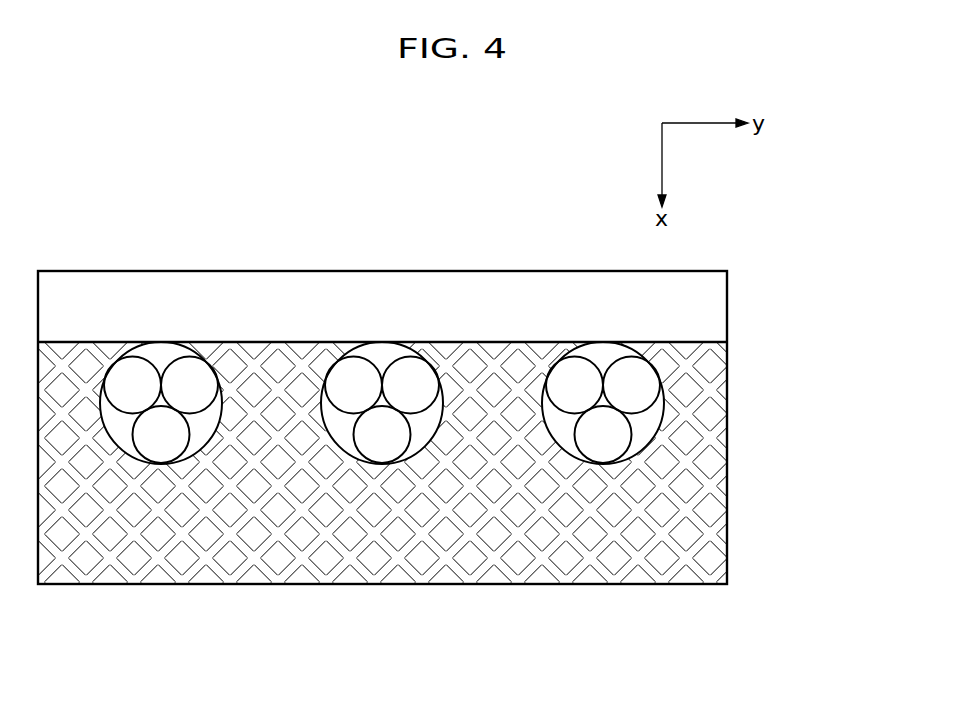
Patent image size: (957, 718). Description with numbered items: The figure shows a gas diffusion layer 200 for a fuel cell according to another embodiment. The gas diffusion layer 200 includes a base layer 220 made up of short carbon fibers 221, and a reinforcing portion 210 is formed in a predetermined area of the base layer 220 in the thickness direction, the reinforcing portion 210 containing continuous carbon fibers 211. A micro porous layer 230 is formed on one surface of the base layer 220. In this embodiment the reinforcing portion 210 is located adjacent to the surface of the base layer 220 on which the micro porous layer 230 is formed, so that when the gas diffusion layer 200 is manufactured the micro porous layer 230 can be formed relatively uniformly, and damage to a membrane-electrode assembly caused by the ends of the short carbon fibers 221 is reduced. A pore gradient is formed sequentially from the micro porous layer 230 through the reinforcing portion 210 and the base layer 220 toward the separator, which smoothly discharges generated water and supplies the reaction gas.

The gas diffusion layer 200 is at (460, 417).
The reinforcing portion 210 is at (452, 303).
The continuous carbon fibers 211 is at (193, 383).
The base layer 220 is at (460, 417).
The short carbon fibers 221 is at (453, 533).
The micro porous layer 230 is at (750, 271).